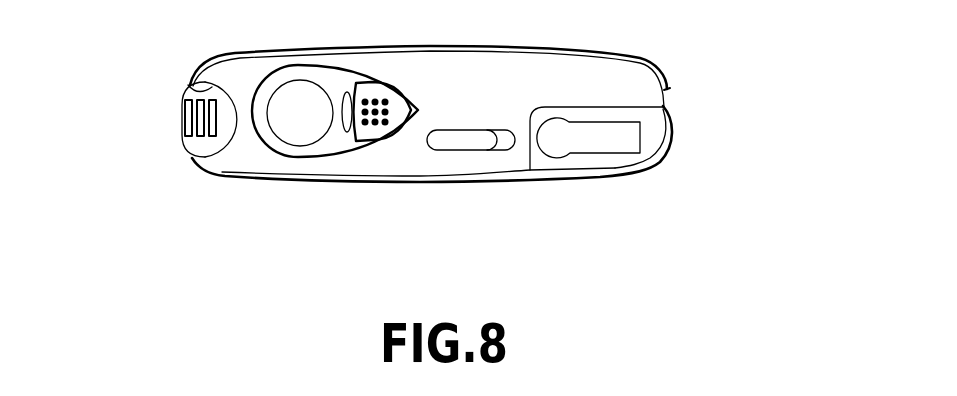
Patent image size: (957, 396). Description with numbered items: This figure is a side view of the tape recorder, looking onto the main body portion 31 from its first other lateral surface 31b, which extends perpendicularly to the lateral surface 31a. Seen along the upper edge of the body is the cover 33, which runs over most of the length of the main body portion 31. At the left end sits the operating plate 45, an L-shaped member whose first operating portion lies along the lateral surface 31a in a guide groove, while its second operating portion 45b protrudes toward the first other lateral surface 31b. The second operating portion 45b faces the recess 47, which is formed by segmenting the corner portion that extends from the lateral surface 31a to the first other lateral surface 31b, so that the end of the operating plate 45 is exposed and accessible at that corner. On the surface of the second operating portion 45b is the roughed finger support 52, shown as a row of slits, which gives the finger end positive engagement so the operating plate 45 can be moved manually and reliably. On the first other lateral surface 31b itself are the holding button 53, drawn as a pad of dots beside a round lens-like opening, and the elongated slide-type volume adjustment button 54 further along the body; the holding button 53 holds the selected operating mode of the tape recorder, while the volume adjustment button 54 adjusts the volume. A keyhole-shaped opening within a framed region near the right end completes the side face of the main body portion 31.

The main body portion 31 is at (650, 123).
The lateral surface 31a is at (194, 162).
The first other lateral surface 31b is at (623, 78).
The cover 33 is at (557, 49).
The operating plate 45 is at (182, 108).
The second operating portion 45b is at (195, 143).
The recess 47 is at (200, 88).
The roughed finger support 52 is at (218, 106).
The holding button 53 is at (373, 132).
The volume adjustment button 54 is at (480, 139).